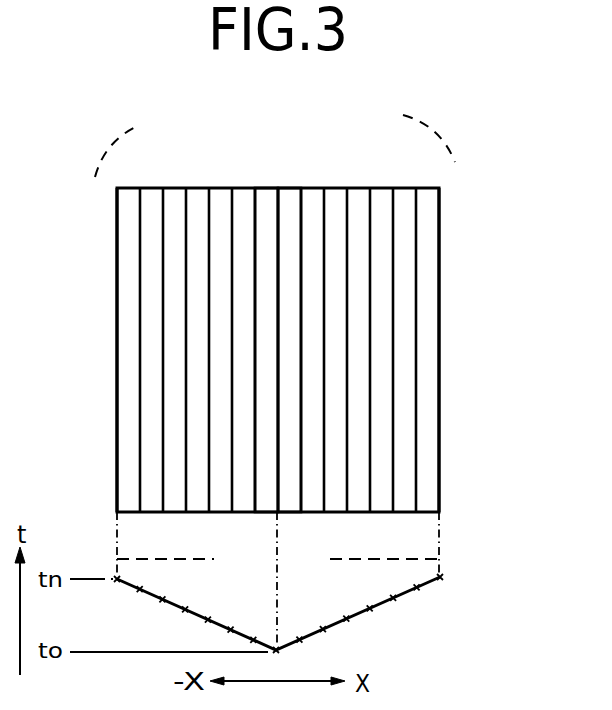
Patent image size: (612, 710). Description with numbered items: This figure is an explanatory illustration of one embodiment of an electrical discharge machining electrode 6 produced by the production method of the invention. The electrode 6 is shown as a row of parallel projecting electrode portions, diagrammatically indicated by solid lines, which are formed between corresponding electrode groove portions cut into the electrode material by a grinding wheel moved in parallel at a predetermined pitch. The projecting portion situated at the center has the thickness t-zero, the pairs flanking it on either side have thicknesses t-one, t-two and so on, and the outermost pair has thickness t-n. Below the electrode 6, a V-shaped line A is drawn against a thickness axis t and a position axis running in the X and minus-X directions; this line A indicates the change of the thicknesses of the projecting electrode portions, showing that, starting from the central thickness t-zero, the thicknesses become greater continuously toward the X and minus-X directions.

The electrode 6 is at (453, 333).
The V-shaped line A is at (395, 615).